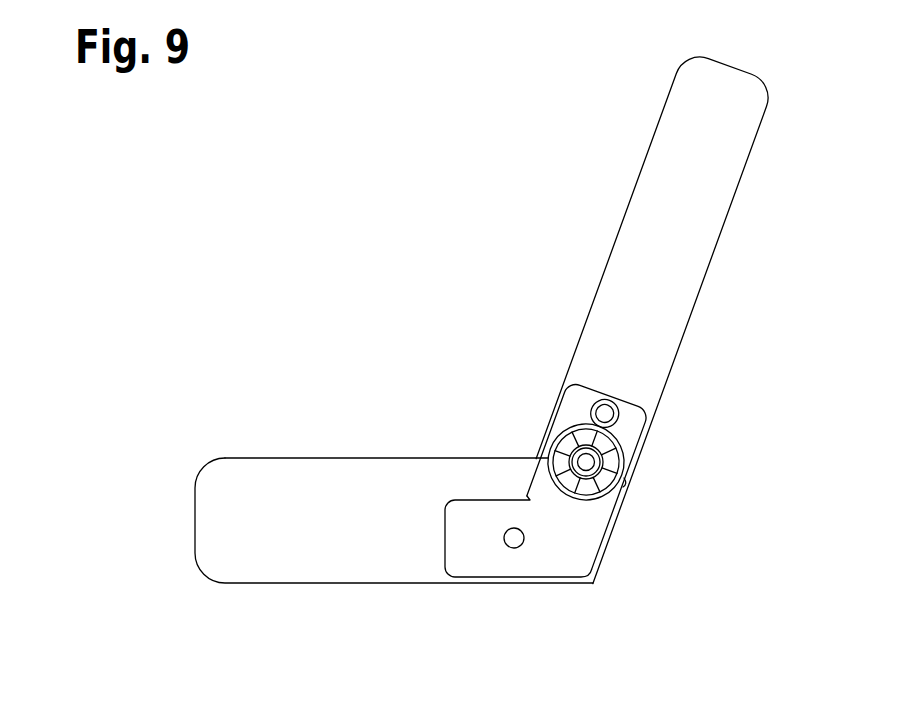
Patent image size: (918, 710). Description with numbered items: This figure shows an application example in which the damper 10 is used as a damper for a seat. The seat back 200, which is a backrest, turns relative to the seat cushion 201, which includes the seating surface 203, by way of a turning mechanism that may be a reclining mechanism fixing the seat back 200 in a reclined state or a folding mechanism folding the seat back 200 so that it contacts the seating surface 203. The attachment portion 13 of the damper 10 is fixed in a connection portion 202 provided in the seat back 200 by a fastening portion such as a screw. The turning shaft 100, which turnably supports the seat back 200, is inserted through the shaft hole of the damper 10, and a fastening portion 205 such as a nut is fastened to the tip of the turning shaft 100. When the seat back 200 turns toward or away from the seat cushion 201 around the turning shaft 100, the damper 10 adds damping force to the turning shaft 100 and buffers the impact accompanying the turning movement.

The seat back 200 is at (627, 208).
The seat cushion 201 is at (195, 518).
The connection portion 202 is at (588, 387).
The seating surface 203 is at (320, 457).
The fastening portion 205 is at (553, 446).
The turning shaft 100 is at (603, 460).
The attachment portion 13 is at (615, 419).
The damper 10 is at (624, 486).